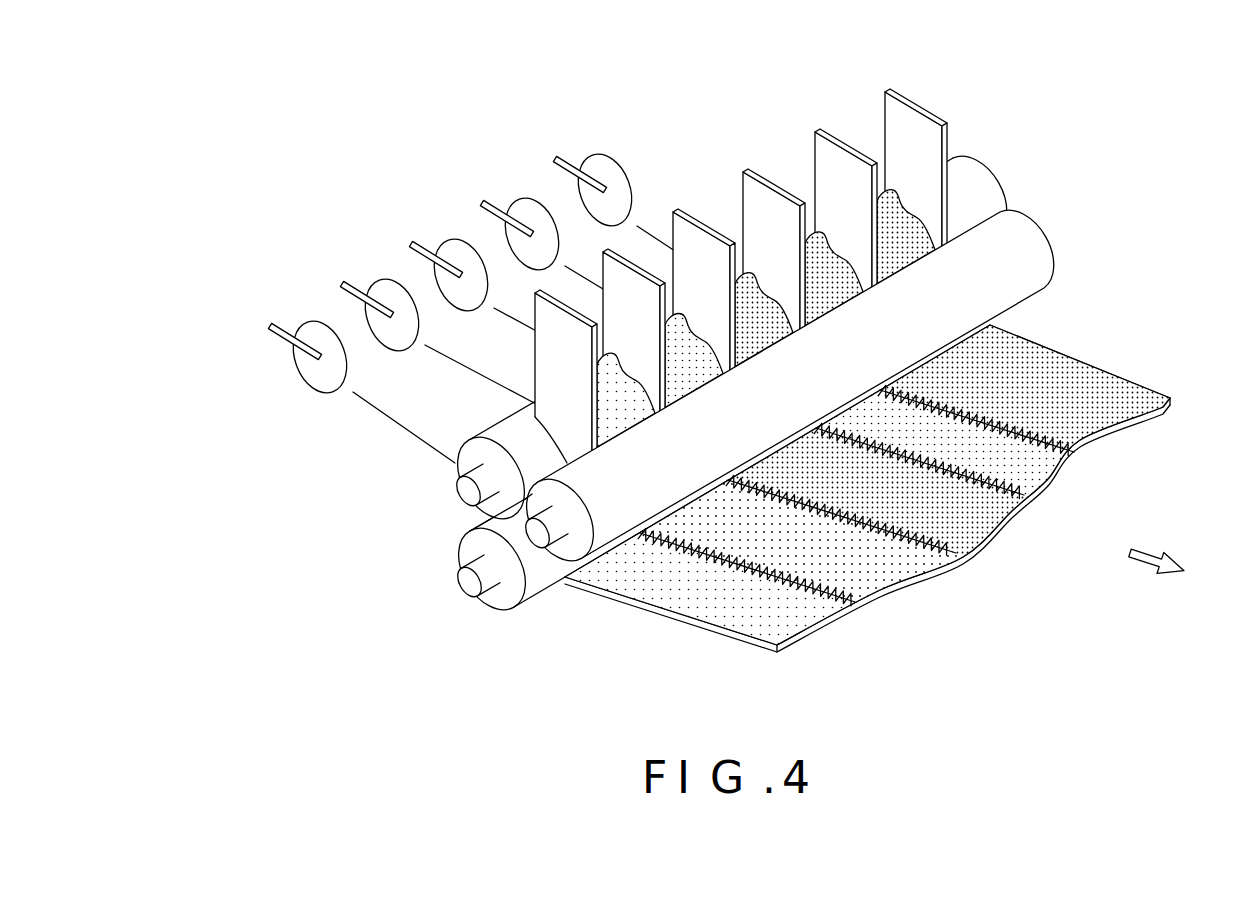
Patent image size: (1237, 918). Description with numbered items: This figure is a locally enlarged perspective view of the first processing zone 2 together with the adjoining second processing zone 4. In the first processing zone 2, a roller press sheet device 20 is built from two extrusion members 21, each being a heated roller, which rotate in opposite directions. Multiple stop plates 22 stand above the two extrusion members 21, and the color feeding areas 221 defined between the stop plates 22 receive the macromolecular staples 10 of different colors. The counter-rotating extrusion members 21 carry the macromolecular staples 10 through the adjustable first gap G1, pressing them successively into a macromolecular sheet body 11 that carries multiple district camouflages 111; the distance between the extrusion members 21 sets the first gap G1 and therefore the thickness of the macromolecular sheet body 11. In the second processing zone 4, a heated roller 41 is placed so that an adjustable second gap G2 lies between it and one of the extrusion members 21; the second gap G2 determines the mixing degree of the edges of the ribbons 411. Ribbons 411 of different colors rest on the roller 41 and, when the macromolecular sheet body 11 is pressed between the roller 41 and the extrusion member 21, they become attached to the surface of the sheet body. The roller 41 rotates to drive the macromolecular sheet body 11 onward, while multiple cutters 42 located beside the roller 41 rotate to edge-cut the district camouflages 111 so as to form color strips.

The first processing zone 2 is at (717, 303).
The second processing zone 4 is at (549, 403).
The macromolecular staples 10 is at (947, 243).
The macromolecular sheet body 11 is at (901, 519).
The district camouflages 111 is at (800, 615).
The roller press sheet device 20 is at (468, 470).
The extrusion members 21 is at (673, 343).
The stop plates 22 is at (814, 301).
The color feeding areas 221 is at (797, 182).
The roller 41 is at (494, 598).
The cutters 42 is at (301, 353).
The ribbons 411 is at (847, 600).
The first gap G1 is at (530, 498).
The second gap G2 is at (500, 542).